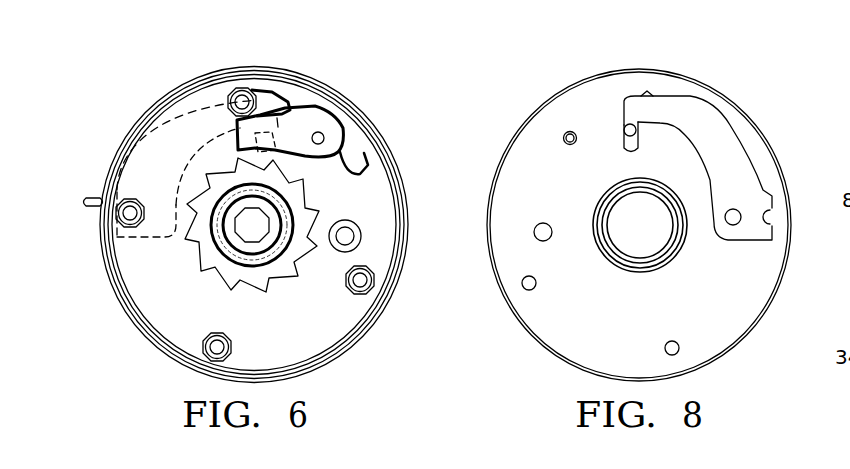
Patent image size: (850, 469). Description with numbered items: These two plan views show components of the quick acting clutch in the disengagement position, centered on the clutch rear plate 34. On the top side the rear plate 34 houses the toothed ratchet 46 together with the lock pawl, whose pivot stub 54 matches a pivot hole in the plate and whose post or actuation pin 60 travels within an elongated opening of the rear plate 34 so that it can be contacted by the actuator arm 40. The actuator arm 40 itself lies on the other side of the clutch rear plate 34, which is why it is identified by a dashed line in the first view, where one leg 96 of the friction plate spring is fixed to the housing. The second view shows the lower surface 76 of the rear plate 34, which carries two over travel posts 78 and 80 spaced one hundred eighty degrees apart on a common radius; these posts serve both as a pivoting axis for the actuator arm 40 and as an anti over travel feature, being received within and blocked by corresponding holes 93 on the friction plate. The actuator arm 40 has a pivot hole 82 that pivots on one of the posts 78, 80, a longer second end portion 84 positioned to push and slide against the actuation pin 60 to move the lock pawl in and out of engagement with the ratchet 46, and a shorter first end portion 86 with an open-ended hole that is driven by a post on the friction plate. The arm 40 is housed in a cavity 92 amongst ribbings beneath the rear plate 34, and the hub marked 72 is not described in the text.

In FIG. 6, the clutch rear plate 34 is at (140, 330).
In FIG. 8, the clutch rear plate 34 is at (518, 322).
In FIG. 6, the actuator arm 40 is at (178, 136).
In FIG. 8, the actuator arm 40 is at (715, 123).
In FIG. 6, the ratchet 46 is at (300, 207).
In FIG. 8, the pivot stub 54 is at (563, 134).
In FIG. 8, the post or actuation pin 60 is at (626, 124).
In FIG. 6, the ratchet gear 72 is at (240, 207).
In FIG. 8, the lower surface 76 is at (653, 323).
In FIG. 8, the over travel post 78 is at (736, 226).
In FIG. 8, the over travel post 80 is at (540, 228).
In FIG. 8, the pivot hole 82 is at (740, 212).
In FIG. 8, the second end portion 84 is at (668, 110).
In FIG. 8, the first end portion 86 is at (768, 243).
In FIG. 6, the cavity 92 is at (145, 467).
In FIG. 6, the hole 93 is at (345, 236).
In FIG. 6, the leg 96 is at (95, 206).